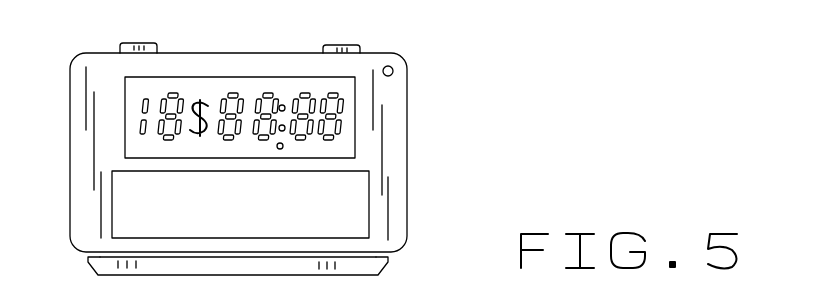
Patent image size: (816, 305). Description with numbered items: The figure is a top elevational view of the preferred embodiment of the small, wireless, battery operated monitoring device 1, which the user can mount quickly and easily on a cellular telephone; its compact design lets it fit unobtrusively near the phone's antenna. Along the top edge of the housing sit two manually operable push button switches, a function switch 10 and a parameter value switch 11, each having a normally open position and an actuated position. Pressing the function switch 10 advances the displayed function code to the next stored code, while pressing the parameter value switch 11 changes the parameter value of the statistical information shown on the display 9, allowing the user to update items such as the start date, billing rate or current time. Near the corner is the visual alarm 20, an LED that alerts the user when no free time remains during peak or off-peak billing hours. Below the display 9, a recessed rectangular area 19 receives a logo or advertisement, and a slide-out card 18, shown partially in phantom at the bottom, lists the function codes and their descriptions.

The monitoring device 1 is at (82, 44).
The function switch 10 is at (149, 43).
The parameter value switch 11 is at (351, 45).
The visual alarm 20 is at (396, 66).
The display 9 is at (355, 106).
The recessed rectangular area 19 is at (369, 210).
The slide-out card 18 is at (390, 274).